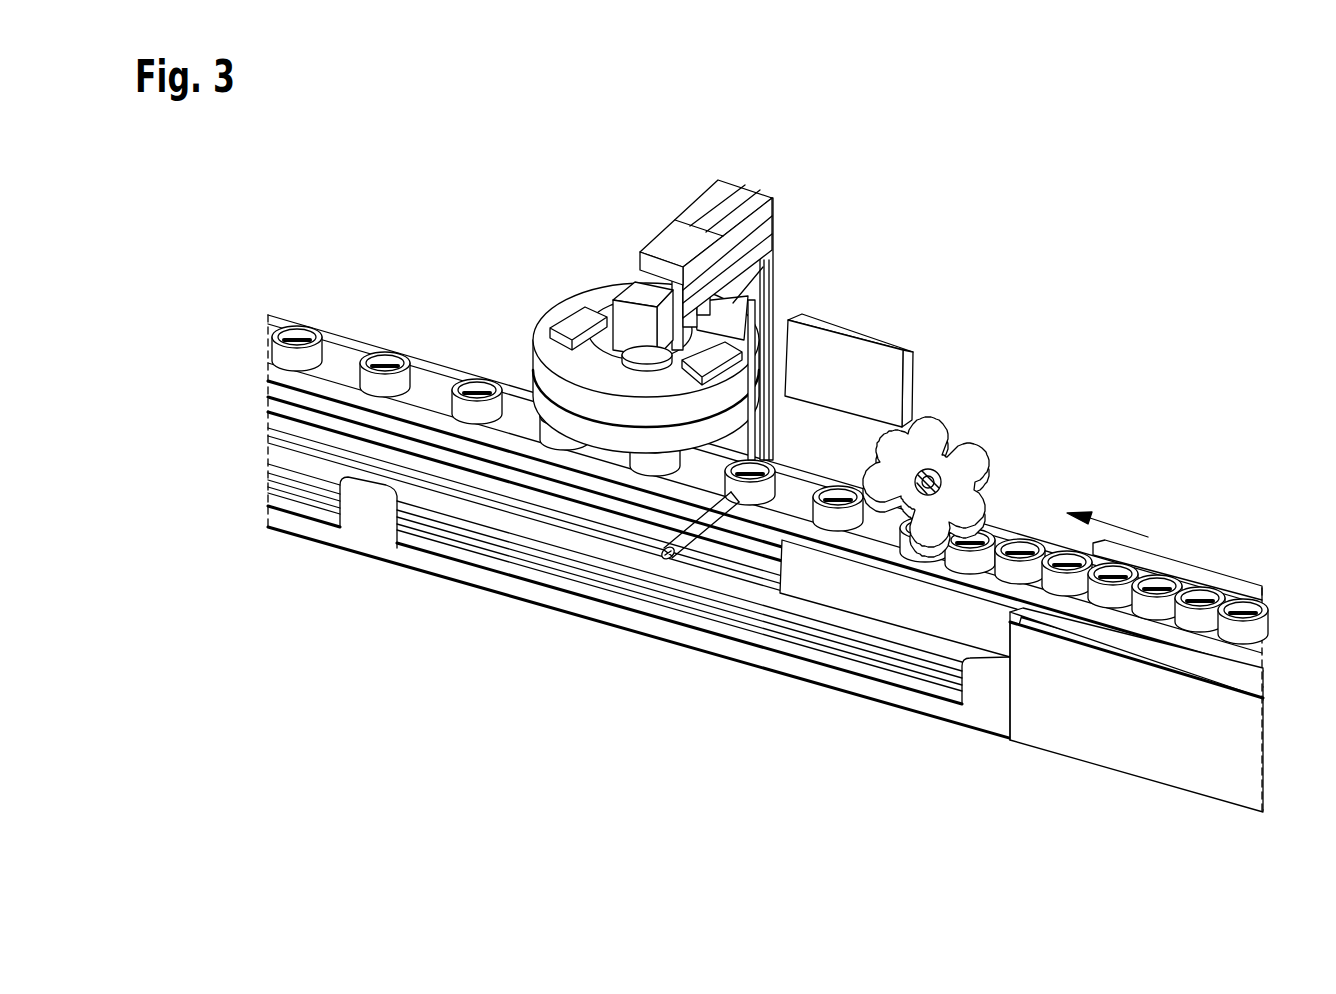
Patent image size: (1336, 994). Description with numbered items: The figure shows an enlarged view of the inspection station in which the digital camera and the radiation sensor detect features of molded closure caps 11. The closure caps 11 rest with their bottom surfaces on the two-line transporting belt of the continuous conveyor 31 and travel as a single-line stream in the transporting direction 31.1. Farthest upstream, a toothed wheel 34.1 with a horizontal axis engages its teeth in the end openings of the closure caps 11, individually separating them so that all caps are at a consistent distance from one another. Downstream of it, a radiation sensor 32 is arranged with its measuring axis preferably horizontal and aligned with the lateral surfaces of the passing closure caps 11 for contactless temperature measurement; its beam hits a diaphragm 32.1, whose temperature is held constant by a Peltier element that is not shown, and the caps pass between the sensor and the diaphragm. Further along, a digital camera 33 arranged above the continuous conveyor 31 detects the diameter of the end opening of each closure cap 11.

The closure cap 11 is at (753, 490).
The continuous conveyor 31 is at (433, 418).
The transporting direction 31.1 is at (1115, 525).
The radiation sensor 32 is at (710, 530).
The diaphragm 32.1 is at (878, 378).
The digital camera 33 is at (623, 315).
The toothed wheel 34.1 is at (968, 473).